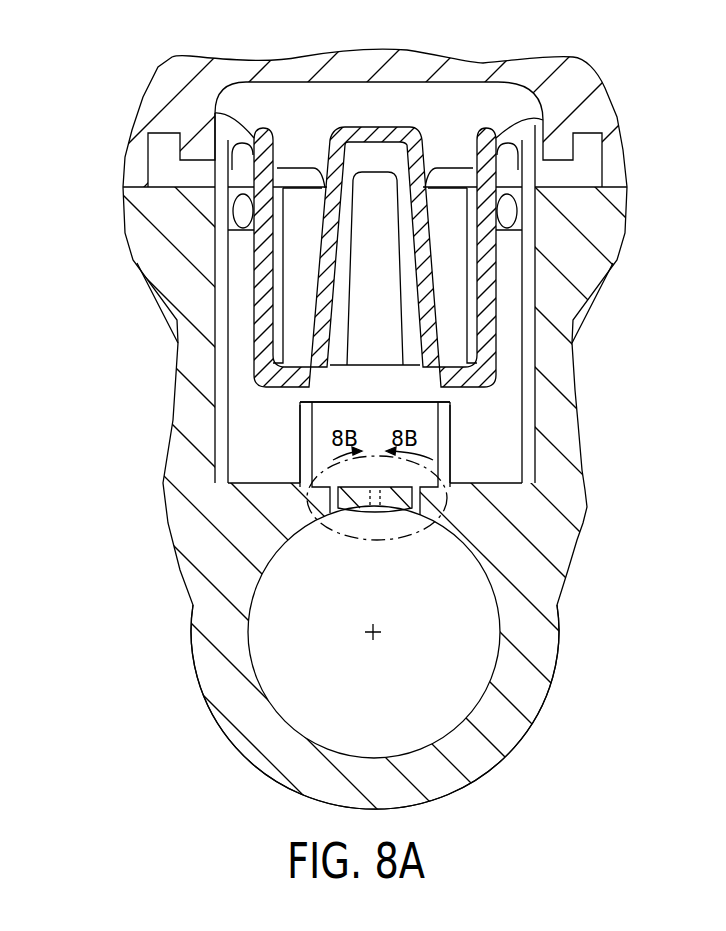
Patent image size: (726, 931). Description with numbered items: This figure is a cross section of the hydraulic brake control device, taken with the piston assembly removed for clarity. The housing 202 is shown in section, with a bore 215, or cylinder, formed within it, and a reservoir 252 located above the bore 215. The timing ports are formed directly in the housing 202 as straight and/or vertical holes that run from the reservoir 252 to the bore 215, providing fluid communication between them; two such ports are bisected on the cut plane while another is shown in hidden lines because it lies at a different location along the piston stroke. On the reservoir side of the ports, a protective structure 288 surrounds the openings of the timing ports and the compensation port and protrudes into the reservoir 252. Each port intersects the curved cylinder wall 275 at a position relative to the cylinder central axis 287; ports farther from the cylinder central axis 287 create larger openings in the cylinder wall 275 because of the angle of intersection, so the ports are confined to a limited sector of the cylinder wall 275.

The housing 202 is at (183, 465).
The bore 215 is at (290, 712).
The reservoir 252 is at (510, 457).
The cylinder wall 275 is at (500, 620).
The cylinder central axis 287 is at (370, 625).
The protective structure 288 is at (300, 410).